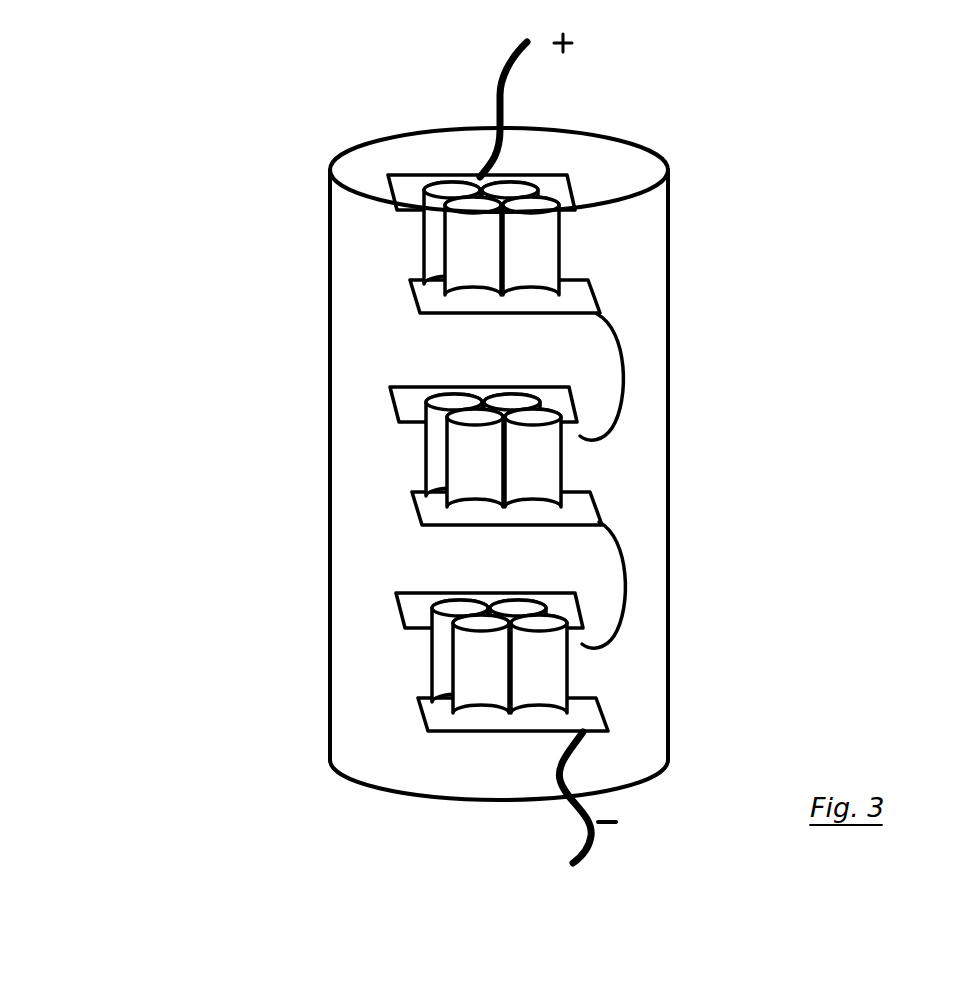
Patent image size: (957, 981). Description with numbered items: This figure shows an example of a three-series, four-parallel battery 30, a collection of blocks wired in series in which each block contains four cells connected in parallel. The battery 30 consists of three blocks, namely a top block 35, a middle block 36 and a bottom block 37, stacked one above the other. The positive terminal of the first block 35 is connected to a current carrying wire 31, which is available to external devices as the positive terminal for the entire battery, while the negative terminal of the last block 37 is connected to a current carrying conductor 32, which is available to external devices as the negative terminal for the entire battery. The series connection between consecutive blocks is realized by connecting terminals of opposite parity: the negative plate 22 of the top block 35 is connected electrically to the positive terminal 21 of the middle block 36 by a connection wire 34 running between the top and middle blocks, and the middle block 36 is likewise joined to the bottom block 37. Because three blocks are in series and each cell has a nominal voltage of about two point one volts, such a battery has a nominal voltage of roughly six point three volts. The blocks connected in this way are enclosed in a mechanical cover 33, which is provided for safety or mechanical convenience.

The battery 30 is at (500, 448).
The current carrying wire 31 is at (512, 105).
The current carrying conductor 32 is at (600, 857).
The mechanical cover 33 is at (683, 582).
The connection wire 34 is at (625, 358).
The first block 35 is at (583, 233).
The middle block 36 is at (467, 404).
The last block 37 is at (580, 682).
The positive terminal 21 is at (379, 353).
The negative plate 22 is at (602, 285).